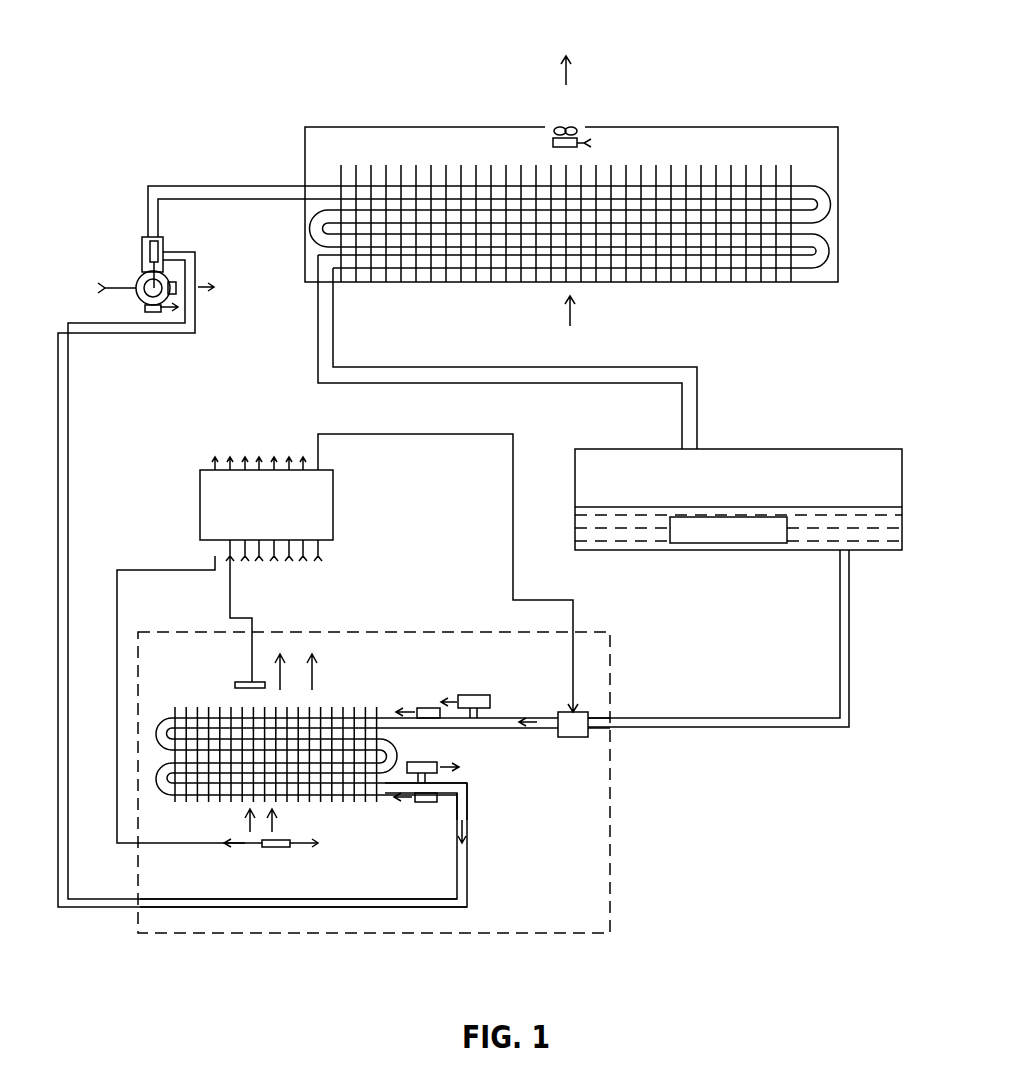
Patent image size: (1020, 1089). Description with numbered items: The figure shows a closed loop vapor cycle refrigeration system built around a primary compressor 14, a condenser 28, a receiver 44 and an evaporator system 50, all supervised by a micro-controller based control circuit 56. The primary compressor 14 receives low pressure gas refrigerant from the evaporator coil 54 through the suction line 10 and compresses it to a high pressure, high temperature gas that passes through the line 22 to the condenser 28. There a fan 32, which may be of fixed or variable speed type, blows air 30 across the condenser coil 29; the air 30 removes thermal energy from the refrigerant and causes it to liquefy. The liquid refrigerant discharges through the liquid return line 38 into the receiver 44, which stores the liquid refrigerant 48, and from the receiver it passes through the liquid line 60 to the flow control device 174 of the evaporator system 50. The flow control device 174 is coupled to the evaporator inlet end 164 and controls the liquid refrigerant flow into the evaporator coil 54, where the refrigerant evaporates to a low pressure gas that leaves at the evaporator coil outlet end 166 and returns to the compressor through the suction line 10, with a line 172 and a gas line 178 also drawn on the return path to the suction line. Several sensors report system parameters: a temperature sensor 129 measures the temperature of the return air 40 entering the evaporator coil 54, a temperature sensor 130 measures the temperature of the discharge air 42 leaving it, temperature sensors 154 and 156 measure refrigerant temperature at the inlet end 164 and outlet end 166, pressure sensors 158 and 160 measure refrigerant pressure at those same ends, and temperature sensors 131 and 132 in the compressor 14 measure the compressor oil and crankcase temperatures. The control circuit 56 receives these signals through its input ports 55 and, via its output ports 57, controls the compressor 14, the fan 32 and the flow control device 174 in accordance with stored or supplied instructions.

The suction line 10 is at (70, 465).
The primary compressor 14 is at (143, 258).
The line 22 is at (192, 187).
The condenser 28 is at (307, 128).
The condenser coil 29 is at (830, 207).
The air 30 is at (570, 69).
The fan 32 is at (552, 143).
The liquid return line 38 is at (318, 360).
The return air 40 is at (272, 825).
The discharge air 42 is at (312, 680).
The receiver 44 is at (613, 449).
The liquid refrigerant 48 is at (790, 540).
The evaporator system 50 is at (320, 630).
The evaporator coil 54 is at (220, 702).
The input ports 55 is at (325, 554).
The control circuit 56 is at (200, 528).
The output ports 57 is at (325, 457).
The liquid line 60 is at (850, 718).
The temperature sensor 129 is at (278, 848).
The temperature sensor 130 is at (252, 675).
The temperature sensor 131 is at (177, 282).
The temperature sensor 132 is at (145, 310).
The temperature sensor 154 is at (430, 706).
The temperature sensor 156 is at (418, 802).
The pressure sensor 158 is at (498, 684).
The pressure sensor 160 is at (435, 752).
The evaporator inlet end 164 is at (540, 728).
The evaporator coil outlet end 166 is at (468, 787).
The line 172 is at (453, 800).
The flow control device 174 is at (588, 735).
The gas line 178 is at (222, 908).